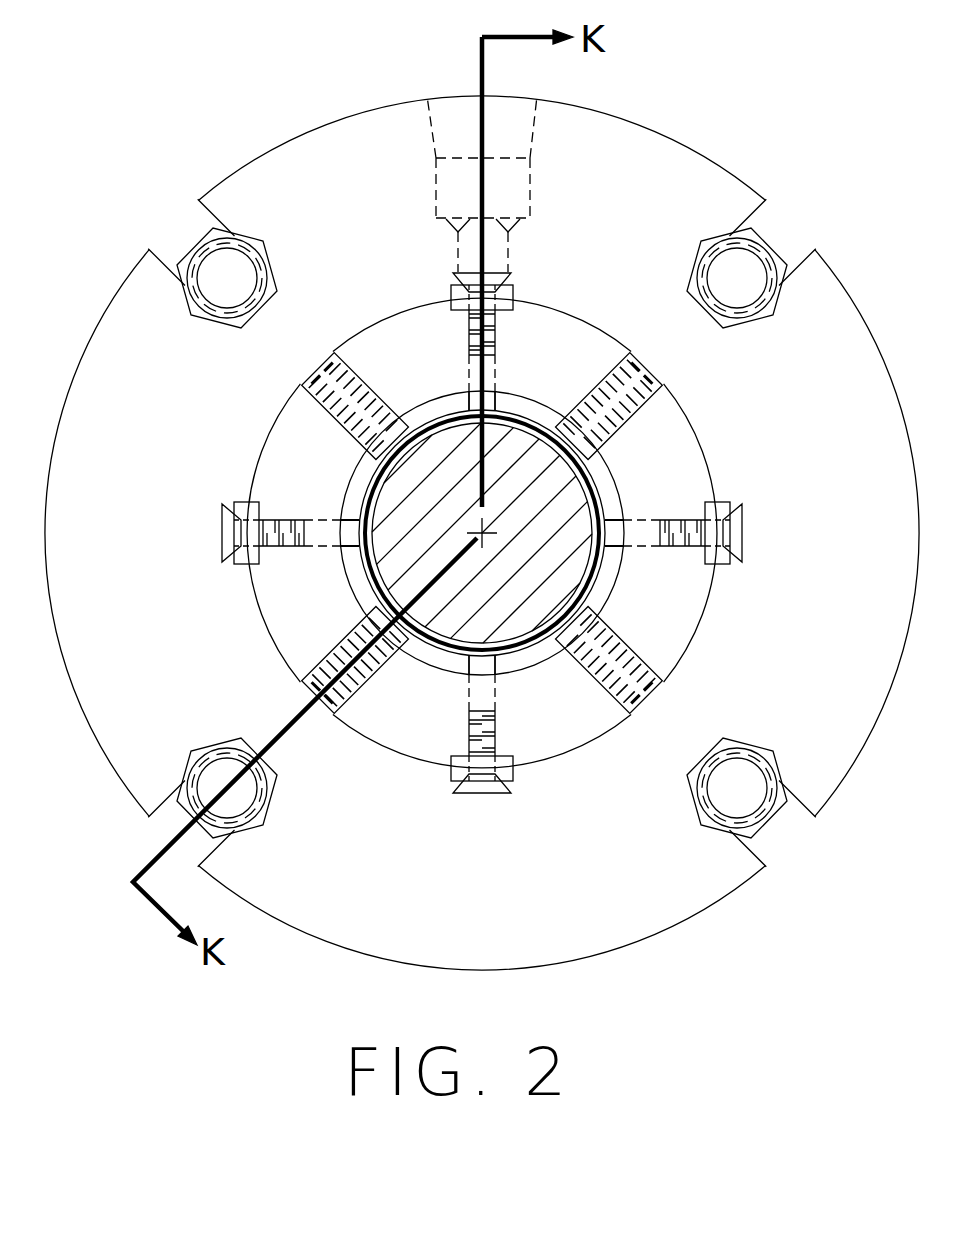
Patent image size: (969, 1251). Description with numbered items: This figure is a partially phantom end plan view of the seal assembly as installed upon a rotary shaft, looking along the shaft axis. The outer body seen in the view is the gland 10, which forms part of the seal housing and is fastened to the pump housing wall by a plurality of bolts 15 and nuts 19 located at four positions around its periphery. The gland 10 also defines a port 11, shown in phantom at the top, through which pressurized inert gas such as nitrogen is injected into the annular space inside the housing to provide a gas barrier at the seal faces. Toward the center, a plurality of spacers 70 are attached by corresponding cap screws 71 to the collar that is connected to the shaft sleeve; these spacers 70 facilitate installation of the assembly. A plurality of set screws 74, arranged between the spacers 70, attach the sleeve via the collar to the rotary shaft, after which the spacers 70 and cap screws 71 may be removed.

The gland 10 is at (592, 103).
The port 11 is at (460, 94).
The bolt 15 is at (215, 273).
The nut 19 is at (218, 235).
The spacer 70 is at (452, 292).
The cap screw 71 is at (492, 277).
The set screw 74 is at (300, 358).